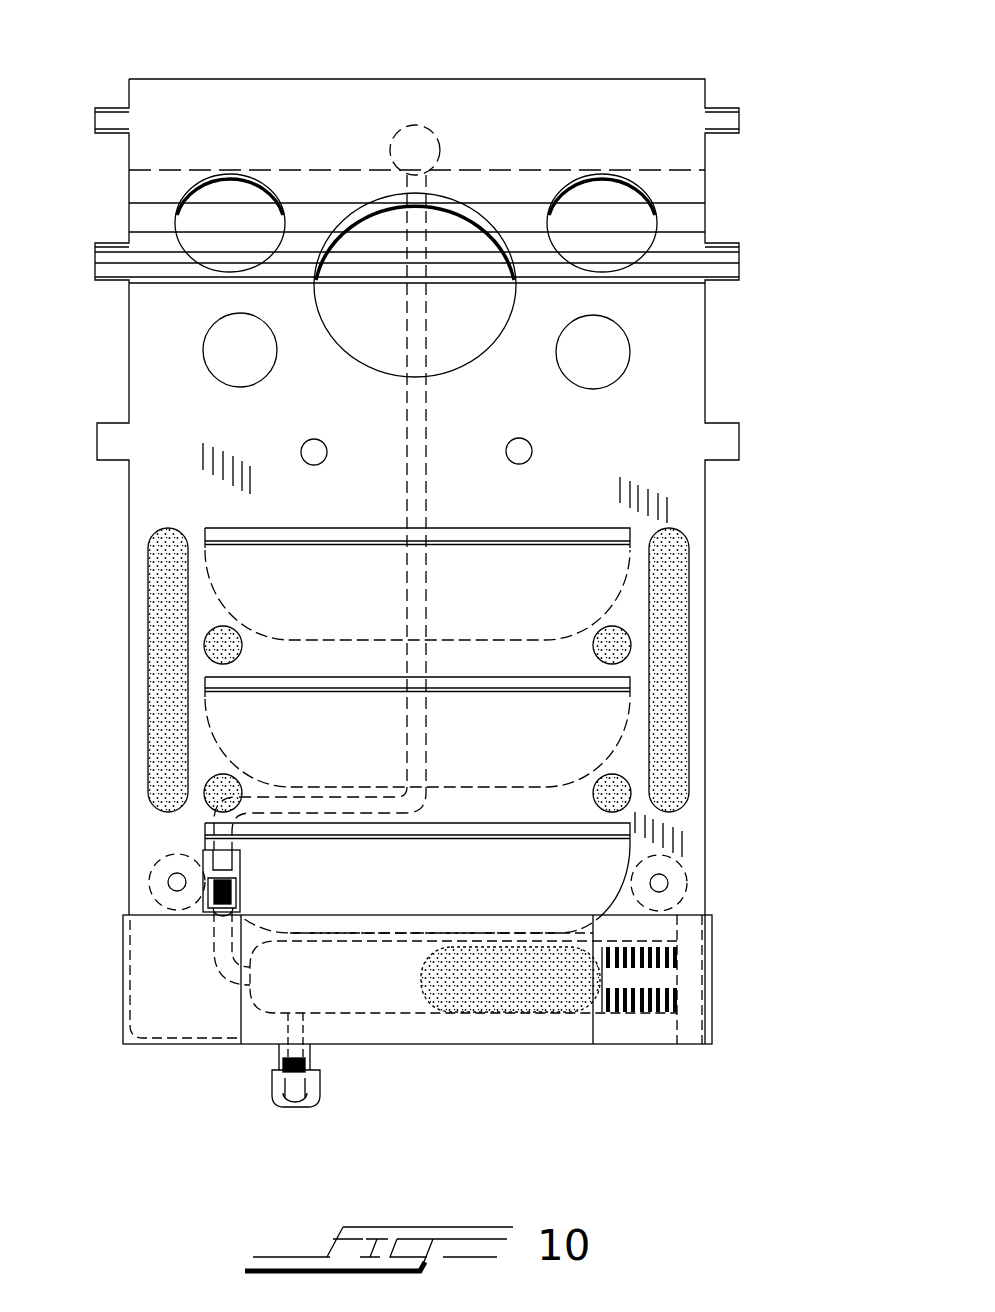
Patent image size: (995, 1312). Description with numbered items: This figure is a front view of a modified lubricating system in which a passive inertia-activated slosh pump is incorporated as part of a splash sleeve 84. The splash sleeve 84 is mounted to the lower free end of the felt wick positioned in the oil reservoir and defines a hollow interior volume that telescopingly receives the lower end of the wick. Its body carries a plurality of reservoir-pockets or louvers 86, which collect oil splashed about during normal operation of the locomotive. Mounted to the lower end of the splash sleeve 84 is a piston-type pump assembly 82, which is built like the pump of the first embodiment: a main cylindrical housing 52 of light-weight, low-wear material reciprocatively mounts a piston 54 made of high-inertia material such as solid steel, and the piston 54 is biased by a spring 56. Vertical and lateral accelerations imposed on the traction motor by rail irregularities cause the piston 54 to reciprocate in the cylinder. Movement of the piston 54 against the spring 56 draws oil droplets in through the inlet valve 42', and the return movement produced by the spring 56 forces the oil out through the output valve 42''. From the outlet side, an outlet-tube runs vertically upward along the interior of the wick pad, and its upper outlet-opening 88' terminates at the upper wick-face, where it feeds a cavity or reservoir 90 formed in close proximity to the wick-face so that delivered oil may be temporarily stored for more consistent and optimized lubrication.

The cavity or reservoir 90 is at (430, 136).
The upper outlet-opening 88' is at (541, 571).
The splash sleeve 84 is at (707, 577).
The reservoir-pockets or louvers 86 is at (538, 605).
The piston-type pump assembly 82 is at (727, 920).
The output valve 42'' is at (130, 871).
The inlet valve 42' is at (233, 1096).
The main cylindrical housing 52 is at (460, 1045).
The piston 54 is at (523, 998).
The spring 56 is at (640, 1005).